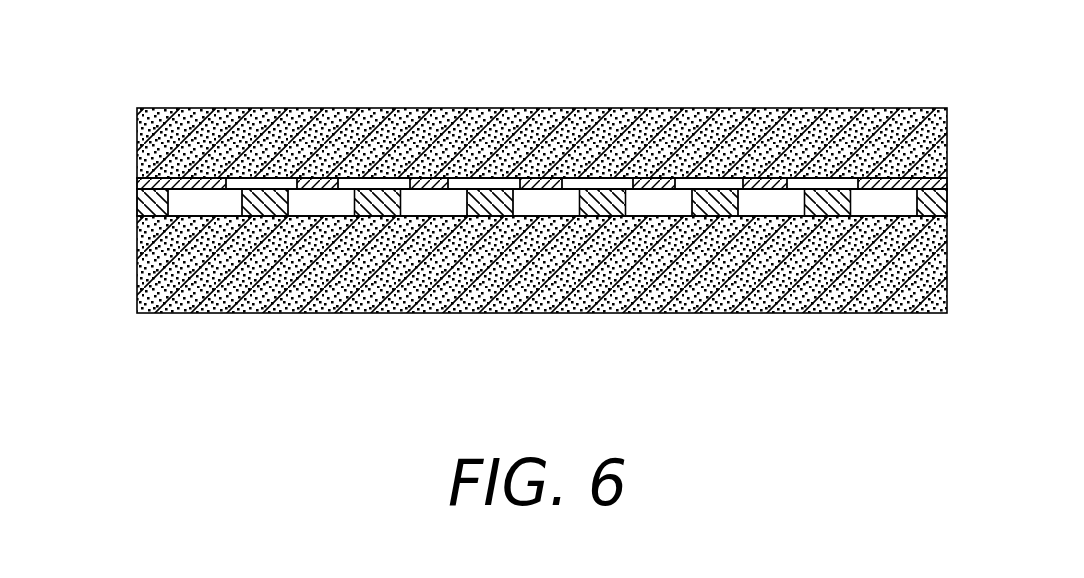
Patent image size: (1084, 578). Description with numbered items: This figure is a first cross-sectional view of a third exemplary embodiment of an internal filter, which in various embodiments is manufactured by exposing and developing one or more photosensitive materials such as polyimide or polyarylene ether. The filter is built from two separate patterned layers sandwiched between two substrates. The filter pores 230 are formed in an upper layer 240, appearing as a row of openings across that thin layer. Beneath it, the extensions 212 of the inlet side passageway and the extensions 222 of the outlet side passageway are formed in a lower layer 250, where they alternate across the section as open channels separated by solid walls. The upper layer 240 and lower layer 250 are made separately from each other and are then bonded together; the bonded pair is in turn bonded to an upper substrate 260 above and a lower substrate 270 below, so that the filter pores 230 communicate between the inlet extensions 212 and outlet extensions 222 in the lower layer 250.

The extensions 212 is at (328, 218).
The extensions 222 is at (767, 218).
The filter pores 230 is at (480, 178).
The upper layer 240 is at (137, 183).
The lower layer 250 is at (137, 205).
The upper substrate 260 is at (137, 133).
The lower substrate 270 is at (137, 265).